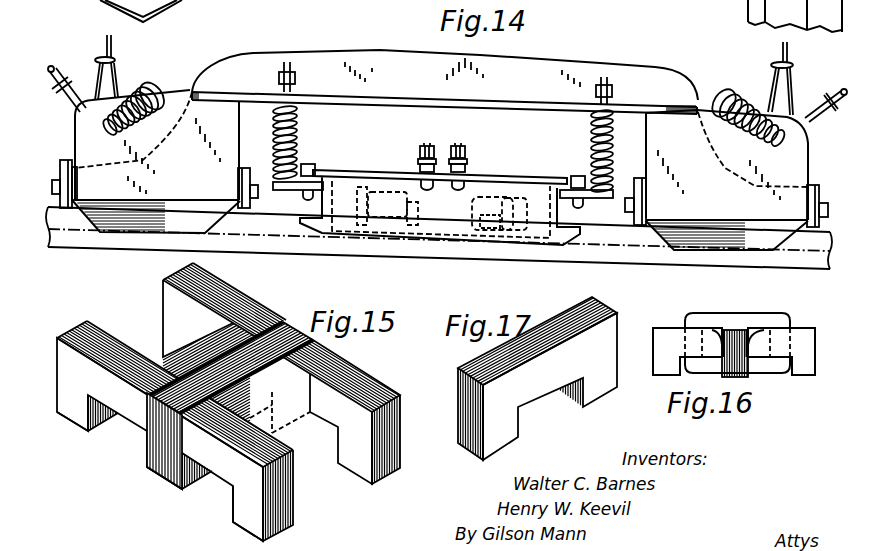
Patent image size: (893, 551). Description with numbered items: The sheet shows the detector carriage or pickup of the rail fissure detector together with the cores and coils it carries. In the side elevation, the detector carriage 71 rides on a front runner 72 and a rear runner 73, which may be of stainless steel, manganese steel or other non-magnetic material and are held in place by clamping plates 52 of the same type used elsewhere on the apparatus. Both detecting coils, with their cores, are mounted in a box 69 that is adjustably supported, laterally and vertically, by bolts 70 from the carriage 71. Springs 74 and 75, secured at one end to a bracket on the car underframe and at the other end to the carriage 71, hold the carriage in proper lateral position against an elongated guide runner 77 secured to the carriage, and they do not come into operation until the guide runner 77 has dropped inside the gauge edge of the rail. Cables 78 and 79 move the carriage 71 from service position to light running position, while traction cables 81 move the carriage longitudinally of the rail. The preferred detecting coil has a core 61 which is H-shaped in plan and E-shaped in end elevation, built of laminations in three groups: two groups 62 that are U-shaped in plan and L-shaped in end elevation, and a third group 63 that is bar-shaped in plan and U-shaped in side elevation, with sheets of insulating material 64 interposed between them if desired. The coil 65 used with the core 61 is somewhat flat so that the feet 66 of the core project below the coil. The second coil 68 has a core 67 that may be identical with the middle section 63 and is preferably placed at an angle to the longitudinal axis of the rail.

In FIG. 14, the clamping plate 52 is at (62, 166).
In FIG. 14, the core 61 is at (358, 196).
In FIG. 15, the core 61 is at (249, 297).
In FIG. 15, the U-shaped lamination groups 62 is at (109, 336).
In FIG. 16, the U-shaped lamination groups 62 is at (676, 328).
In FIG. 15, the bar-shaped lamination group 63 is at (292, 321).
In FIG. 16, the bar-shaped lamination group 63 is at (738, 328).
In FIG. 15, the sheets of insulating material 64 is at (147, 430).
In FIG. 16, the sheets of insulating material 64 is at (718, 327).
In FIG. 14, the coil 65 is at (387, 190).
In FIG. 16, the coil 65 is at (777, 323).
In FIG. 15, the feet 66 is at (76, 418).
In FIG. 16, the feet 66 is at (670, 377).
In FIG. 14, the core 67 is at (520, 200).
In FIG. 17, the core 67 is at (549, 318).
In FIG. 14, the second coil 68 is at (493, 197).
In FIG. 14, the box 69 is at (341, 180).
In FIG. 14, the bolts 70 is at (298, 127).
In FIG. 14, the detector carriage 71 is at (358, 62).
In FIG. 14, the front runner 72 is at (133, 228).
In FIG. 14, the rear runner 73 is at (700, 240).
In FIG. 14, the spring 74 is at (140, 83).
In FIG. 14, the spring 75 is at (750, 88).
In FIG. 14, the guide runner 77 is at (297, 249).
In FIG. 14, the cable 78 is at (113, 45).
In FIG. 14, the cable 79 is at (791, 52).
In FIG. 14, the traction cables 81 is at (66, 70).